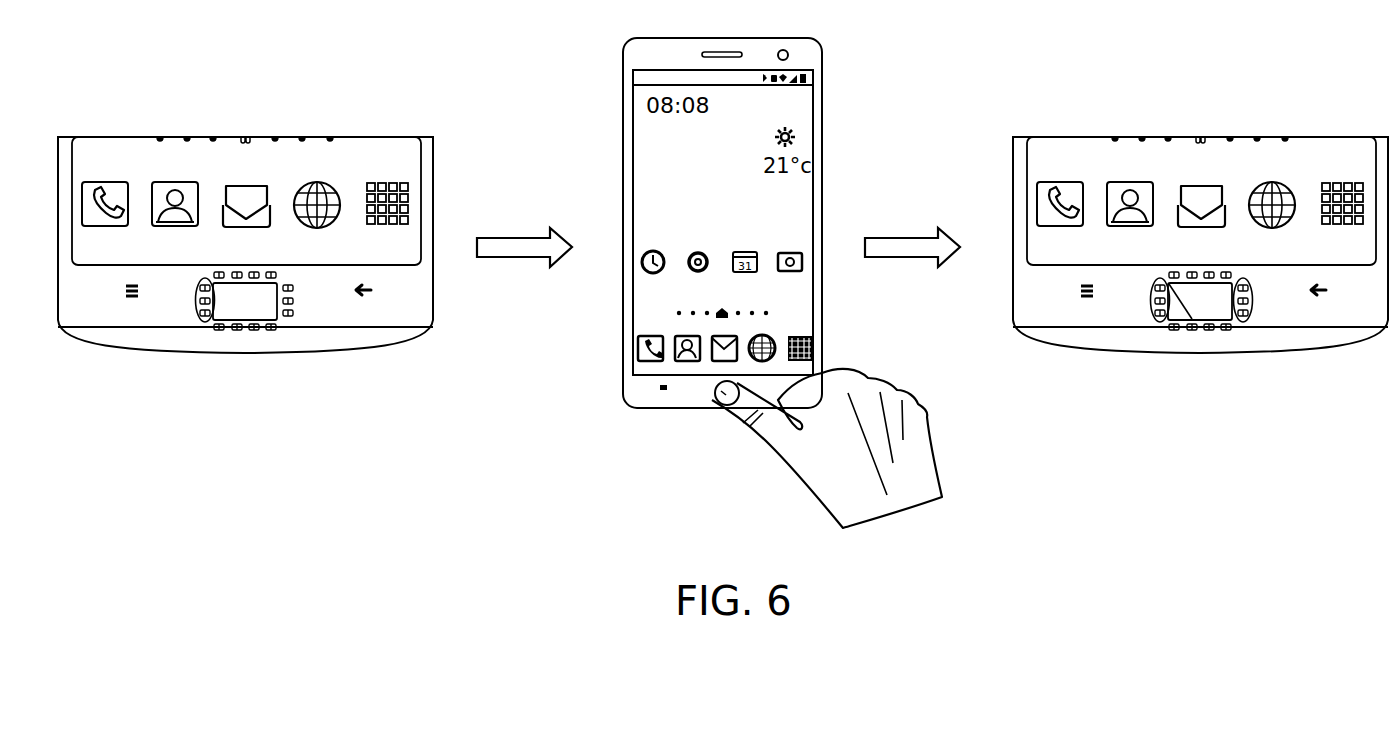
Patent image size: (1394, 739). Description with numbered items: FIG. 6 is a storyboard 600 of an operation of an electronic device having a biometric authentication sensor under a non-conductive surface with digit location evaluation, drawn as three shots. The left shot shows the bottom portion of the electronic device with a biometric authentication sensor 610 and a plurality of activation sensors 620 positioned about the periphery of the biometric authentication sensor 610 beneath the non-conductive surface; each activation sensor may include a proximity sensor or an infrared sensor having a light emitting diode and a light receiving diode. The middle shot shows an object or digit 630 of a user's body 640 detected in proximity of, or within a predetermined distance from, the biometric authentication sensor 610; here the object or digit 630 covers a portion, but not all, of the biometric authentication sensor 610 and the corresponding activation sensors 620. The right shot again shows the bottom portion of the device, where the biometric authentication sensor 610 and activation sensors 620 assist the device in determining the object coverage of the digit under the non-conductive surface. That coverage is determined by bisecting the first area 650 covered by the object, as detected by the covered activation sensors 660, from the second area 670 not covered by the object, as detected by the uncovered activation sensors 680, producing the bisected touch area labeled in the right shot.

The touch area bisection process 600 is at (1200, 342).
The biometric authentication sensor 610 is at (257, 307).
The activation sensors 620 is at (205, 322).
The object or digit 630 is at (717, 403).
The user's body 640 is at (928, 446).
The first area 650 is at (1227, 310).
The covered activation sensors 660 is at (1246, 318).
The second area 670 is at (1175, 313).
The uncovered activation sensors 680 is at (1155, 316).